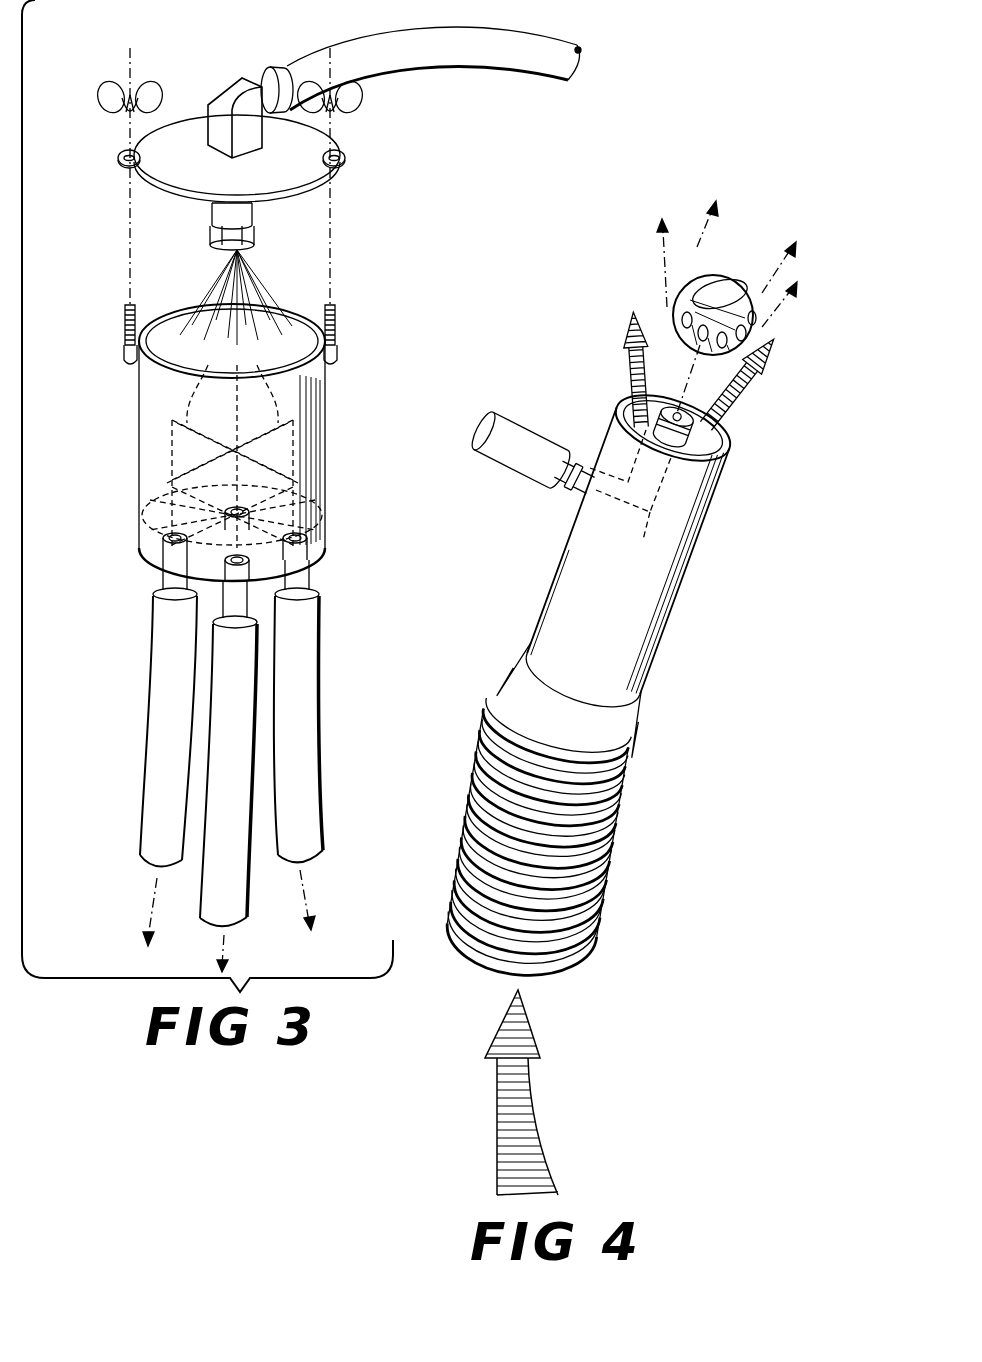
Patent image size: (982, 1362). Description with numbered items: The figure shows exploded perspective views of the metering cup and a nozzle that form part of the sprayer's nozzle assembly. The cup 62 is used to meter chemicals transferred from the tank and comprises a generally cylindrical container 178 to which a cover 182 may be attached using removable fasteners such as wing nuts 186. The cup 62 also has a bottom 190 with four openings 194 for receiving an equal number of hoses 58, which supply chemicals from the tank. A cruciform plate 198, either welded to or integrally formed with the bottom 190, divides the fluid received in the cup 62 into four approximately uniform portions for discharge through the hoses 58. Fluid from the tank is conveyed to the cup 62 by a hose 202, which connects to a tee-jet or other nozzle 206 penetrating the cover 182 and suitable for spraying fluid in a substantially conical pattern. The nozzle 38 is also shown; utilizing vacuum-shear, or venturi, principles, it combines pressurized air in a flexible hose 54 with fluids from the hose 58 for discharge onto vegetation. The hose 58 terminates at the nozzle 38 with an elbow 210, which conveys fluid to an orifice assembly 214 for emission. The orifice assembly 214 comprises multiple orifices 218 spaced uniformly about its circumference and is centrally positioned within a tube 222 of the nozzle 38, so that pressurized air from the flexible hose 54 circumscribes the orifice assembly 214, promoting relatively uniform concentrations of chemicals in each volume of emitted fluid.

In FIG. 4, the nozzle 38 is at (697, 584).
In FIG. 4, the flexible hose 54 is at (481, 783).
In FIG. 3, the hose 58 is at (158, 737).
In FIG. 4, the hose 58 is at (530, 440).
In FIG. 3, the cup 62 is at (372, 333).
In FIG. 3, the container 178 is at (146, 450).
In FIG. 3, the cover 182 is at (172, 172).
In FIG. 3, the wing nut 186 is at (118, 80).
In FIG. 3, the bottom 190 is at (160, 515).
In FIG. 3, the opening 194 is at (165, 541).
In FIG. 3, the cruciform plate 198 is at (265, 357).
In FIG. 3, the hose 202 is at (345, 48).
In FIG. 3, the nozzle 206 is at (255, 225).
In FIG. 4, the elbow 210 is at (648, 550).
In FIG. 4, the orifice assembly 214 is at (728, 290).
In FIG. 4, the orifice 218 is at (675, 322).
In FIG. 4, the tube 222 is at (728, 436).